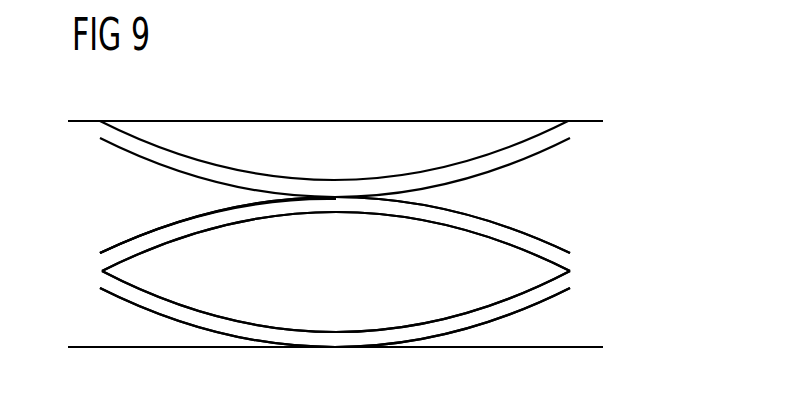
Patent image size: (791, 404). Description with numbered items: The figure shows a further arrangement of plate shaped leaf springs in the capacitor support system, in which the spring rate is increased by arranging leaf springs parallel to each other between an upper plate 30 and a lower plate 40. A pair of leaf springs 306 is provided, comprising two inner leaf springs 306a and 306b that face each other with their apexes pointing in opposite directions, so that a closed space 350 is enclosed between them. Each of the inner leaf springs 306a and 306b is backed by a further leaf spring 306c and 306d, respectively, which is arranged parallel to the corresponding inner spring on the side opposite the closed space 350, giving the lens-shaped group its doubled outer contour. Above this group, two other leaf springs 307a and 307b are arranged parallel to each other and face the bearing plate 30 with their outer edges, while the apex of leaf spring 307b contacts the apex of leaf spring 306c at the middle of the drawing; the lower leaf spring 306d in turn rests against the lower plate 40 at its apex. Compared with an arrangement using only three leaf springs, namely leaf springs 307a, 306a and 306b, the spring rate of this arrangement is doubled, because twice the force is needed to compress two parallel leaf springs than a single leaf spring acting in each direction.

The first plate / upper wall 30 is at (588, 121).
The second plate / lower wall 40 is at (560, 350).
The leaf spring 307a is at (505, 149).
The leaf spring 307b is at (550, 150).
The pair of leaf springs 306 is at (594, 262).
The leaf spring 306a is at (203, 229).
The leaf spring 306b is at (203, 309).
The leaf spring 306c is at (535, 233).
The leaf spring 306d is at (518, 314).
The closed space 350 is at (160, 263).